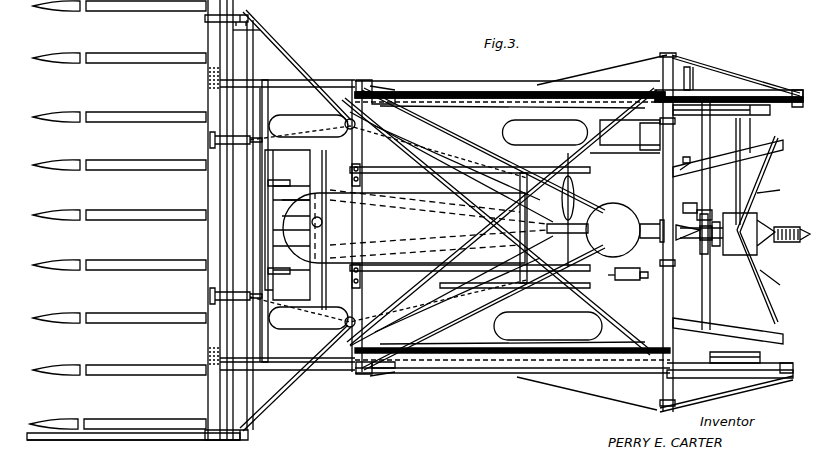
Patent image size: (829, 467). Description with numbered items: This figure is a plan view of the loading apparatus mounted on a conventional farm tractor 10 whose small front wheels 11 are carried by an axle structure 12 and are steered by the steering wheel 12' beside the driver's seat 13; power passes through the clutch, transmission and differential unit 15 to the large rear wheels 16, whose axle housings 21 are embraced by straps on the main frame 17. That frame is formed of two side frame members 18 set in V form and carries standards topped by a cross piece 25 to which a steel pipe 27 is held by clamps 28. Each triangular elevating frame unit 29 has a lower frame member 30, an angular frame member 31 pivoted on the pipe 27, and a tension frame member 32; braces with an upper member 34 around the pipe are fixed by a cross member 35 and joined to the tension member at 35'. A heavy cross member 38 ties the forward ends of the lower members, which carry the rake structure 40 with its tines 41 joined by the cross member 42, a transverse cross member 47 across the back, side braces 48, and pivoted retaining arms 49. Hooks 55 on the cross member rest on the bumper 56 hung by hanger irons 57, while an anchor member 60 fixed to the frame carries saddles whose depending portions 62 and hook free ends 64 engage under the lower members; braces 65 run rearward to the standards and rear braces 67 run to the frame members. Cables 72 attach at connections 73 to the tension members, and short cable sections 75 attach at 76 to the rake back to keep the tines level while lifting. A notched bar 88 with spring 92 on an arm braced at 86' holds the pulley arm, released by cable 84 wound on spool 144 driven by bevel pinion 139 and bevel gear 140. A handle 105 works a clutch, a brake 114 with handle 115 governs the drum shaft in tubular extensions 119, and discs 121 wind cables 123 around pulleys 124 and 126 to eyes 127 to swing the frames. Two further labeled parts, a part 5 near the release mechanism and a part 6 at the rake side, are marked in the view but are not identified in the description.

The post 5 is at (766, 254).
The frame bar 6 is at (281, 250).
The farm tractor 10 is at (415, 226).
The front wheels 11 is at (310, 125).
The axle structure 12 is at (406, 226).
The steering wheel 12' is at (581, 210).
The driver's seat 13 is at (588, 234).
The clutch, transmission and differential unit 15 is at (606, 212).
The rear wheels 16 is at (548, 230).
The frame 17 is at (684, 157).
The side frame members 18 is at (770, 145).
The housings 21 is at (566, 158).
The cross piece 25 is at (625, 146).
The load supporting member 27 is at (663, 76).
The clamps 28 is at (630, 135).
The elevating frame unit 29 is at (314, 376).
The lower frame member 30 is at (314, 80).
The angular frame member 31 is at (740, 88).
The tension frame member 32 is at (463, 85).
The upper member 34 is at (660, 409).
The cross member 35 is at (714, 232).
The brace connection 35' is at (592, 224).
The cross member 38 is at (272, 80).
The rake structure 40 is at (168, 445).
The tines 41 is at (138, 52).
The cross member 42 is at (210, 102).
The transverse cross member 47 is at (250, 30).
The side braces 48 is at (210, 134).
The retaining arm 49 is at (158, 2).
The hooks 55 is at (284, 228).
The bumper 56 is at (287, 222).
The hanger irons 57 is at (292, 219).
The anchor member 60 is at (350, 118).
The depending portion 62 is at (380, 105).
The free end 64 is at (360, 80).
The brace members 65 is at (470, 170).
The rear braces 67 is at (708, 157).
The cables 72 is at (478, 146).
The cable connections 73 is at (382, 90).
The cable sections 75 is at (290, 60).
The cable connection 76 is at (250, 12).
The cable 84 is at (710, 250).
The arm brace 86' is at (779, 239).
The bar 88 is at (766, 226).
The spring 92 is at (792, 242).
The handle 105 is at (648, 222).
The brake 114 is at (716, 210).
The brake handle 115 is at (688, 204).
The tubular extensions 119 is at (752, 184).
The discs 121 is at (724, 116).
The cable 123 is at (512, 224).
The pulley 124 is at (552, 230).
The pulley 126 is at (797, 108).
The eye 127 is at (375, 86).
The bevel pinion 139 is at (657, 275).
The bevel gear 140 is at (626, 266).
The spool 144 is at (606, 273).